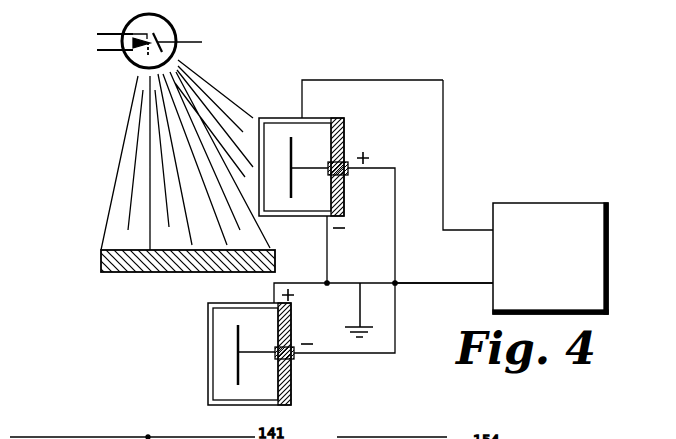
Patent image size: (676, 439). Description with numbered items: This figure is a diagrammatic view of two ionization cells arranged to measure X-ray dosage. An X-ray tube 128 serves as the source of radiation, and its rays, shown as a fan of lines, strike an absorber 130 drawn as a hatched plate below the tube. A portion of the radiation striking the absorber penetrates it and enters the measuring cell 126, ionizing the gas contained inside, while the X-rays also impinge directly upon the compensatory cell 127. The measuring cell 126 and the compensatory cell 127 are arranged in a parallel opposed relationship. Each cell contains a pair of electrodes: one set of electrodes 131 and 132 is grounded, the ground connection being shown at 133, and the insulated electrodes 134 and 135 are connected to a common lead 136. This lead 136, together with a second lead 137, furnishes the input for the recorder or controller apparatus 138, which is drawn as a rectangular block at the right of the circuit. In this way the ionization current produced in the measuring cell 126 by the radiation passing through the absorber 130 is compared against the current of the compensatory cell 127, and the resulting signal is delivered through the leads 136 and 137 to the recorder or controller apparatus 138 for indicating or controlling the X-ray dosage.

The measuring cell 126 is at (228, 343).
The compensatory cell 127 is at (322, 168).
The X-ray tube 128 is at (127, 62).
The absorber 130 is at (118, 260).
The electrode 131 is at (246, 303).
The electrode 132 is at (324, 216).
The ground 133 is at (341, 281).
The insulated electrode 134 is at (292, 155).
The insulated electrode 135 is at (239, 342).
The lead 136 is at (458, 281).
The lead 137 is at (444, 153).
The recorder or controller apparatus 138 is at (608, 250).